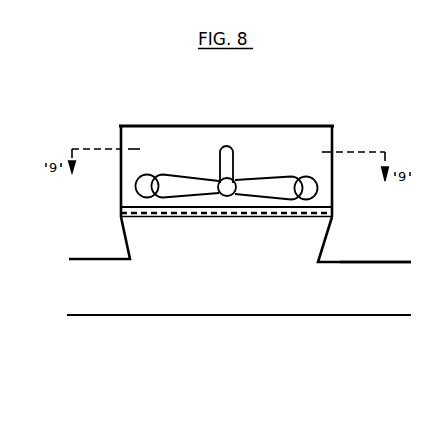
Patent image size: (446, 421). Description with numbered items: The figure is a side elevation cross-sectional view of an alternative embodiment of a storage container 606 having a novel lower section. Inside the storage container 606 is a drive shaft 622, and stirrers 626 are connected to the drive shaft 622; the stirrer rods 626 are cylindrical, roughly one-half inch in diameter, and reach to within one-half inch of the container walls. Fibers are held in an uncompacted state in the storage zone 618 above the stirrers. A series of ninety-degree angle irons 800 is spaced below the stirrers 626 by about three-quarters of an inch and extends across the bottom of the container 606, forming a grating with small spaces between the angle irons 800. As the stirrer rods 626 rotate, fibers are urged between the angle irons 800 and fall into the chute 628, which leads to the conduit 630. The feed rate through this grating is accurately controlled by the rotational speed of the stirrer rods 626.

The storage container 606 is at (333, 127).
The storage zone 618 is at (186, 160).
The drive shaft 622 is at (236, 155).
The stirrer 626 is at (134, 189).
The chute 628 is at (234, 254).
The conduit 630 is at (352, 262).
The angle iron 800 is at (333, 216).